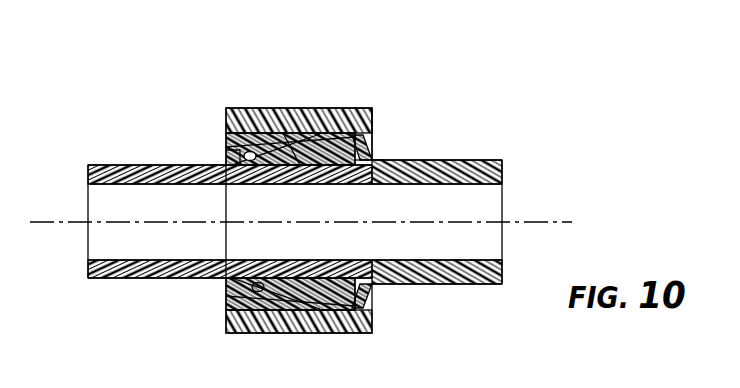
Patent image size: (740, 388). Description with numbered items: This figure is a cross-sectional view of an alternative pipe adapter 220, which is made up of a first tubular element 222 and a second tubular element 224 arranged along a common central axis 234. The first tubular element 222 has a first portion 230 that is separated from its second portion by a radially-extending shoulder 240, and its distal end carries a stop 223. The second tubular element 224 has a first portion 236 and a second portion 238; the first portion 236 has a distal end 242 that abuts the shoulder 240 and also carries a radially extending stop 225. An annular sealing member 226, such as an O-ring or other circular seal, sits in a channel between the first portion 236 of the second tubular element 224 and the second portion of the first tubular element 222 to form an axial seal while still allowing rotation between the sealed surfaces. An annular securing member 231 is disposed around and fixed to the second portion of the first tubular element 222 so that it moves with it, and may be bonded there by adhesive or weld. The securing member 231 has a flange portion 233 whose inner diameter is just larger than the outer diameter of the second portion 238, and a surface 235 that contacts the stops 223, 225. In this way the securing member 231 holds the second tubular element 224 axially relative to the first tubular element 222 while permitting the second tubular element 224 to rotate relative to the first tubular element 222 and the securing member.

The pipe adapter 220 is at (490, 76).
The first tubular element 222 is at (182, 163).
The stop 223 is at (373, 140).
The second tubular element 224 is at (283, 110).
The radially extending stop 225 is at (372, 150).
The annular sealing member 226 is at (253, 110).
The first portion 230 is at (186, 279).
The annular securing member 231 is at (287, 334).
The flange portion 233 is at (377, 158).
The central axis 234 is at (521, 220).
The surface 235 is at (352, 133).
The first portion 236 is at (283, 278).
The second portion 238 is at (446, 285).
The radially-extending shoulder 240 is at (240, 176).
The distal end 242 is at (228, 152).